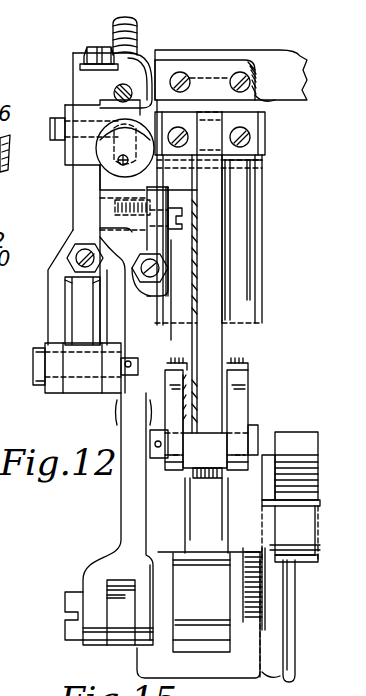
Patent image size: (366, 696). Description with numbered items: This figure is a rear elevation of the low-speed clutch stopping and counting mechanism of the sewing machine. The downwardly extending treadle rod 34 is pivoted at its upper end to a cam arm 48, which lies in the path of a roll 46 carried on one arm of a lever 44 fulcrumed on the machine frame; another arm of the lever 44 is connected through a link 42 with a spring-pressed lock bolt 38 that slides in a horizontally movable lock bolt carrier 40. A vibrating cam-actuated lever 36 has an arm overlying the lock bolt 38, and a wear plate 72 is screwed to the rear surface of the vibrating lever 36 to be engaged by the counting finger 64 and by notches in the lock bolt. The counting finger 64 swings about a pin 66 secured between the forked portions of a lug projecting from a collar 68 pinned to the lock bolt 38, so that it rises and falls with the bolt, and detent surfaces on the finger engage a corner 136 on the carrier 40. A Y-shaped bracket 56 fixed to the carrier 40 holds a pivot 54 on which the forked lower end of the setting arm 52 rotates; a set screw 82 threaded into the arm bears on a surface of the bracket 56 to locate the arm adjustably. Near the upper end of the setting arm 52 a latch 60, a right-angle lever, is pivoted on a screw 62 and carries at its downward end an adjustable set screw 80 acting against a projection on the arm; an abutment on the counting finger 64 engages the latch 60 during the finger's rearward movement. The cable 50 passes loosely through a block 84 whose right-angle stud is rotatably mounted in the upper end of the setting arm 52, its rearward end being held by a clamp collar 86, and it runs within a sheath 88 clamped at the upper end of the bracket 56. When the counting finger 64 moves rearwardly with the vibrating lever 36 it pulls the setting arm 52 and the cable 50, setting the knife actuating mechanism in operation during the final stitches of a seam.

The treadle rod 34 is at (283, 652).
The vibrating cam-actuated lever 36 is at (255, 50).
The lock bolt 38 is at (230, 346).
The lock bolt carrier 40 is at (262, 192).
The link 42 is at (121, 516).
The lever 44 is at (214, 676).
The roll 46 is at (298, 537).
The cam arm 48 is at (292, 432).
The cable 50 is at (105, 166).
The setting arm 52 is at (48, 317).
The pivot 54 is at (33, 365).
The Y-shaped bracket 56 is at (65, 295).
The latch 60 is at (170, 240).
The screw 62 is at (182, 220).
The counting finger 64 is at (240, 268).
The pin 66 is at (150, 446).
The collar 68 is at (248, 400).
The wear plate 72 is at (268, 98).
The adjustable set screw 80 is at (162, 271).
The set screw 82 is at (68, 250).
The block 84 is at (73, 108).
The clamp collar 86 is at (100, 184).
The sheath 88 is at (140, 36).
The corner 136 is at (240, 166).